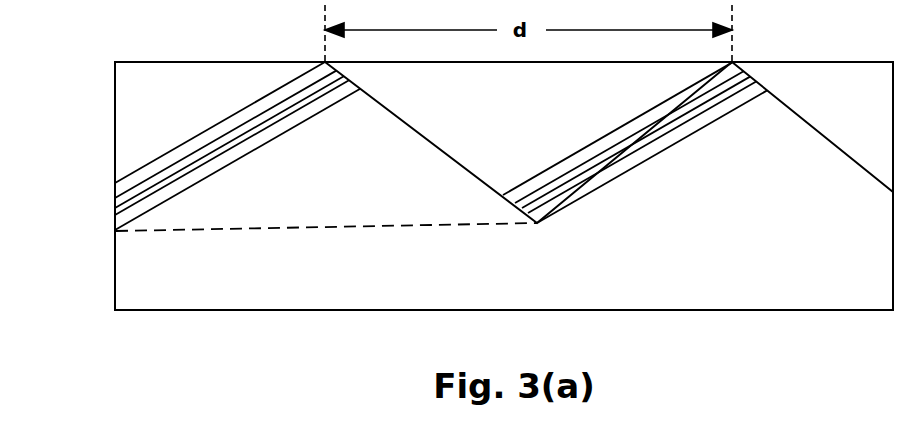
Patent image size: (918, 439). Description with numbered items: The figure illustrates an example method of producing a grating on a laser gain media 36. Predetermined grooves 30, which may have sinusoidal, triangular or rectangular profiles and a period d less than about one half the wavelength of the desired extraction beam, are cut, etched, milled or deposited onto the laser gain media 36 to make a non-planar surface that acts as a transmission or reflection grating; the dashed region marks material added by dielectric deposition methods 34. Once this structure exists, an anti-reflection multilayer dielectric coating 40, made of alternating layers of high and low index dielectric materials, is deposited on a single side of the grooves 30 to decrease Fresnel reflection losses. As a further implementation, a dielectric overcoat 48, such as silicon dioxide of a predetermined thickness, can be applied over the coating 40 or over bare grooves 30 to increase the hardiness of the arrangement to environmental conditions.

The grooves 30 is at (442, 150).
The dielectric deposition region 34 is at (345, 191).
The laser gain media 36 is at (530, 289).
The multilayer dielectric coating 40 is at (218, 139).
The dielectric overcoat 48 is at (145, 125).